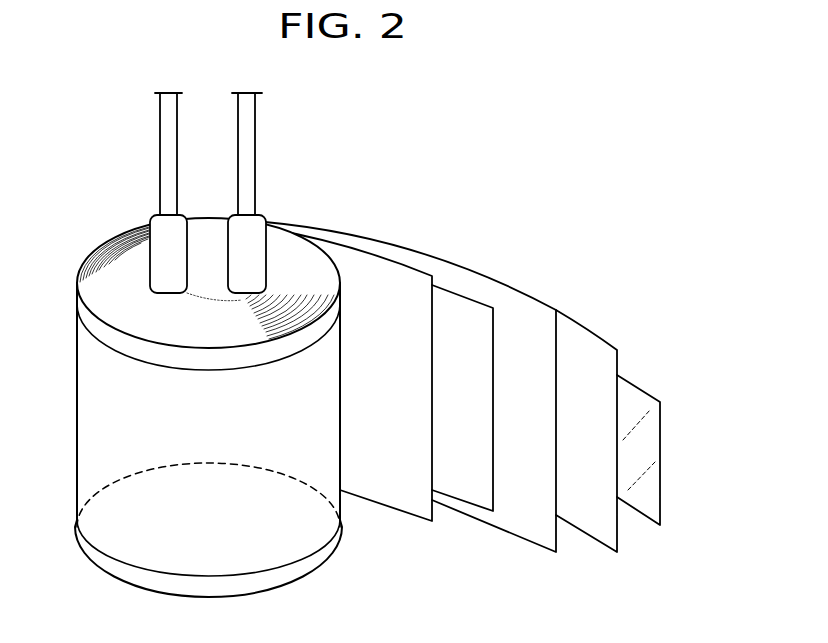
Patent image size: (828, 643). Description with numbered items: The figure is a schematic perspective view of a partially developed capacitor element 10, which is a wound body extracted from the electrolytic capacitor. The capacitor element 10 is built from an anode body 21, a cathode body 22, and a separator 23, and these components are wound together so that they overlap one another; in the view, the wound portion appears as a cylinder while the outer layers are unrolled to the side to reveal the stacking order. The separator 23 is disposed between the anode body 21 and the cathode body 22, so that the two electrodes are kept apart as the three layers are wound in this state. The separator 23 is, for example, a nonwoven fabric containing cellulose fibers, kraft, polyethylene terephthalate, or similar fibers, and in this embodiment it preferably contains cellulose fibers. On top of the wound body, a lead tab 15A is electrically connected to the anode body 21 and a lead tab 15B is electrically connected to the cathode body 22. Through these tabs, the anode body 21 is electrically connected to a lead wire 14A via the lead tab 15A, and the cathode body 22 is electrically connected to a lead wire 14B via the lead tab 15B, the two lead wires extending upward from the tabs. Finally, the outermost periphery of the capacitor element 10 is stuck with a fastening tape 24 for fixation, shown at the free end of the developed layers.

The capacitor element 10 is at (95, 585).
The lead wire 14A is at (168, 133).
The lead wire 14B is at (247, 130).
The lead tab 15A is at (158, 224).
The lead tab 15B is at (258, 224).
The anode body 21 is at (470, 492).
The cathode body 22 is at (597, 530).
The separator 23 is at (397, 495).
The fastening tape 24 is at (657, 447).